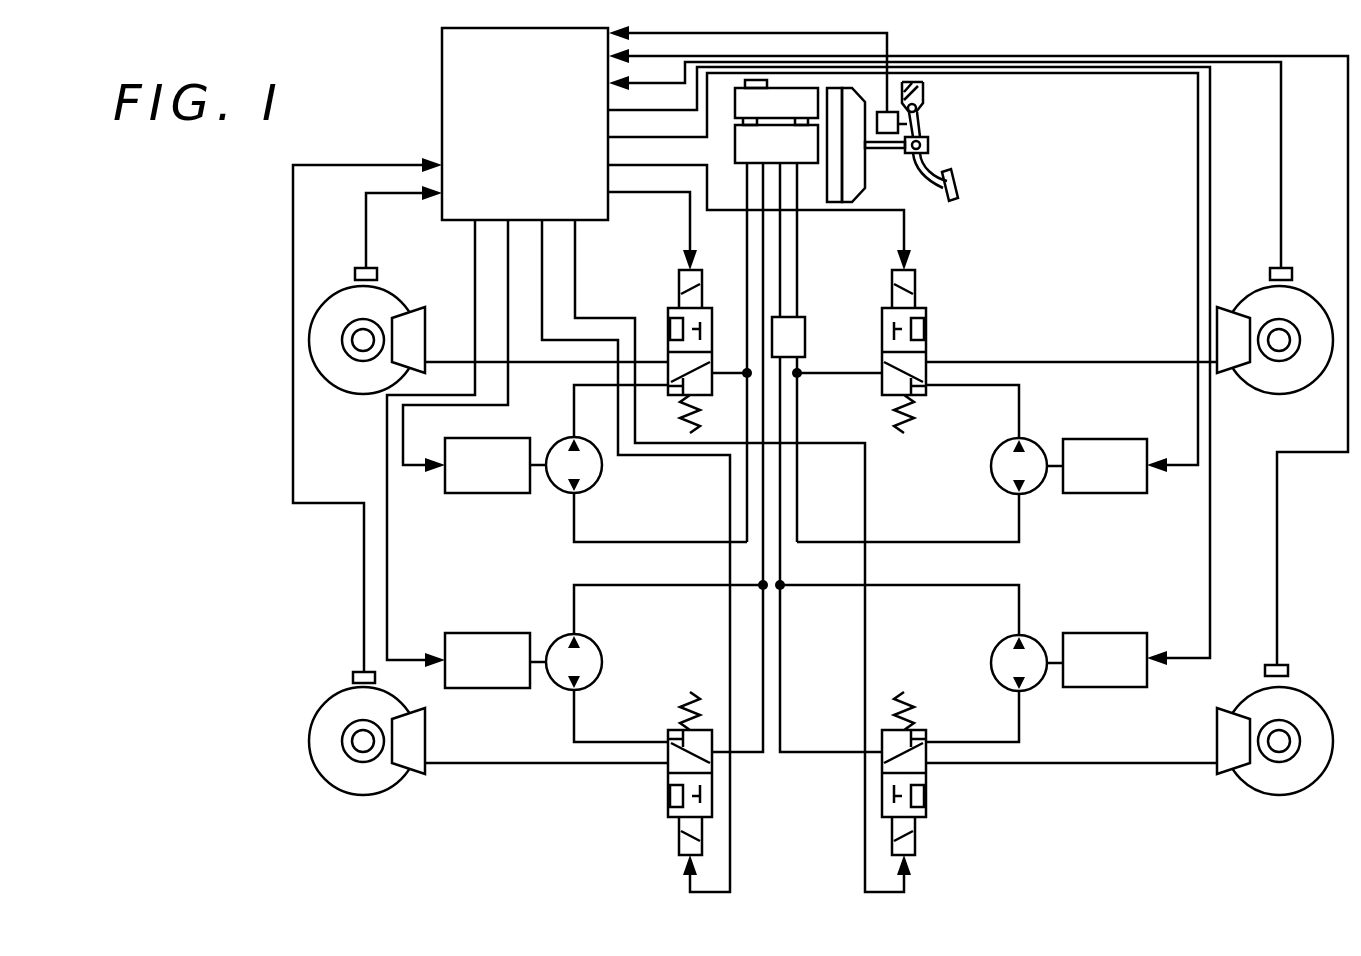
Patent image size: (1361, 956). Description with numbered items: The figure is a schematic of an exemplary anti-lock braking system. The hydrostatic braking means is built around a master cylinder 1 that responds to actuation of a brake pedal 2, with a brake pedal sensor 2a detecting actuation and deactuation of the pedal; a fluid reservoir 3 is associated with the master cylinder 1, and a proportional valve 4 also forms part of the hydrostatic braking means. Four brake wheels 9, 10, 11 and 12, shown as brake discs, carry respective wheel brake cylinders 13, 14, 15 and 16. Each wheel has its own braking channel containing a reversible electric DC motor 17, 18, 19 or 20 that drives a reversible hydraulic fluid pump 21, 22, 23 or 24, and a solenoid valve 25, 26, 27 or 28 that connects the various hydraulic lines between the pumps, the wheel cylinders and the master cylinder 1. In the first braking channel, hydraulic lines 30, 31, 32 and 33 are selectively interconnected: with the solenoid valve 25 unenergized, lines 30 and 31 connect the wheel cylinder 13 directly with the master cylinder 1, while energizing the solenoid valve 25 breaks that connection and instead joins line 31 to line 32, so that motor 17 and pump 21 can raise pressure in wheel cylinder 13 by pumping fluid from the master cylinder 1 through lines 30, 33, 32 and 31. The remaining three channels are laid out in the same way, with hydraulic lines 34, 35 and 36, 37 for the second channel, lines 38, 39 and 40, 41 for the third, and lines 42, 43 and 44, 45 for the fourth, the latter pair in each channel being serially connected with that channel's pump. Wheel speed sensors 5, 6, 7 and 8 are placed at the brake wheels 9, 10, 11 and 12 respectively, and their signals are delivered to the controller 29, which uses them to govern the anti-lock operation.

The master cylinder 1 is at (776, 144).
The brake pedal 2 is at (957, 187).
The brake pedal sensor 2a is at (877, 113).
The fluid reservoir 3 is at (776, 102).
The proportional valve 4 is at (788, 337).
The wheel speed sensor 5 is at (355, 271).
The wheel speed sensor 6 is at (353, 677).
The wheel speed sensor 7 is at (1276, 268).
The wheel speed sensor 8 is at (1290, 667).
The brake wheel 9 is at (363, 340).
The brake wheel 10 is at (363, 741).
The brake wheel 11 is at (1279, 340).
The brake wheel 12 is at (1279, 741).
The wheel brake cylinder 13 is at (408, 340).
The wheel brake cylinder 14 is at (408, 741).
The wheel brake cylinder 15 is at (1233, 340).
The wheel brake cylinder 16 is at (1233, 741).
The reversible electric DC motor 17 is at (474, 356).
The reversible electric DC motor 18 is at (466, 454).
The reversible electric DC motor 19 is at (903, 283).
The reversible electric DC motor 20 is at (909, 377).
The reversible hydraulic fluid pump 21 is at (574, 465).
The reversible hydraulic fluid pump 22 is at (574, 662).
The reversible hydraulic fluid pump 23 is at (1019, 466).
The reversible hydraulic fluid pump 24 is at (1019, 663).
The solenoid valve 25 is at (668, 310).
The solenoid valve 26 is at (668, 800).
The solenoid valve 27 is at (927, 320).
The solenoid valve 28 is at (927, 797).
The controller 29 is at (525, 124).
The hydraulic line 30 is at (747, 276).
The hydraulic line 31 is at (537, 372).
The hydraulic line 32 is at (582, 387).
The hydraulic line 33 is at (577, 510).
The hydraulic line 34 is at (763, 566).
The hydraulic line 35 is at (500, 766).
The hydraulic line 36 is at (623, 742).
The hydraulic line 37 is at (577, 607).
The hydraulic line 38 is at (800, 253).
The hydraulic line 39 is at (1096, 360).
The hydraulic line 40 is at (1020, 405).
The hydraulic line 41 is at (938, 540).
The hydraulic line 42 is at (790, 583).
The hydraulic line 43 is at (1101, 766).
The hydraulic line 44 is at (972, 740).
The hydraulic line 45 is at (975, 590).